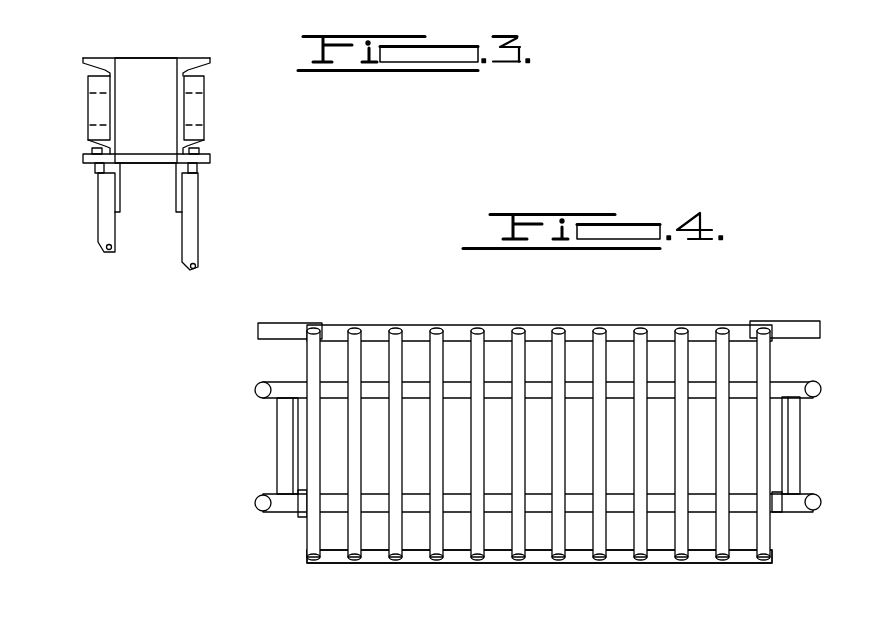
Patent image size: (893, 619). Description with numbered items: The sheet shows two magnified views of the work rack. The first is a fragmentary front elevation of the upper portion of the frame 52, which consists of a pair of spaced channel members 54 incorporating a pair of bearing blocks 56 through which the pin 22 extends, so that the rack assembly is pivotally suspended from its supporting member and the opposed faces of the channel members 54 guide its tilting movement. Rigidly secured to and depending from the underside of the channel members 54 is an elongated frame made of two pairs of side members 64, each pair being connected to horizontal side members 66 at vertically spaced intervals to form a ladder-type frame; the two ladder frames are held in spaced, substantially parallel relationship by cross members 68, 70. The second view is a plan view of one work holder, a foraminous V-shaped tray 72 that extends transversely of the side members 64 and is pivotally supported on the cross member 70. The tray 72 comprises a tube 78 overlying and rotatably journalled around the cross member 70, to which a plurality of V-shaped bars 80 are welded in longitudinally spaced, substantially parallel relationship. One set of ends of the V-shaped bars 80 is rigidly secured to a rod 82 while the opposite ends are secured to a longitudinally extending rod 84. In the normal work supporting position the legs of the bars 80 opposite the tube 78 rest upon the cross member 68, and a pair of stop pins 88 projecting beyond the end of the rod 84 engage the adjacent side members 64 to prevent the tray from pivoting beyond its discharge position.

In FIG. 3, the pin 22 is at (180, 110).
In FIG. 3, the frame 52 is at (194, 54).
In FIG. 3, the channel members 54 is at (98, 59).
In FIG. 3, the bearing blocks 56 is at (90, 135).
In FIG. 3, the side members 64 is at (118, 238).
In FIG. 4, the side members 64 is at (255, 390).
In FIG. 4, the horizontal side members 66 is at (277, 438).
In FIG. 4, the cross member 68 is at (785, 382).
In FIG. 4, the cross member 70 is at (790, 512).
In FIG. 4, the tray 72 is at (553, 563).
In FIG. 4, the tube 78 is at (335, 510).
In FIG. 4, the V-shaped bars 80 is at (435, 330).
In FIG. 4, the rod 82 is at (668, 557).
In FIG. 4, the rod 84 is at (580, 332).
In FIG. 4, the stop pins 88 is at (288, 287).